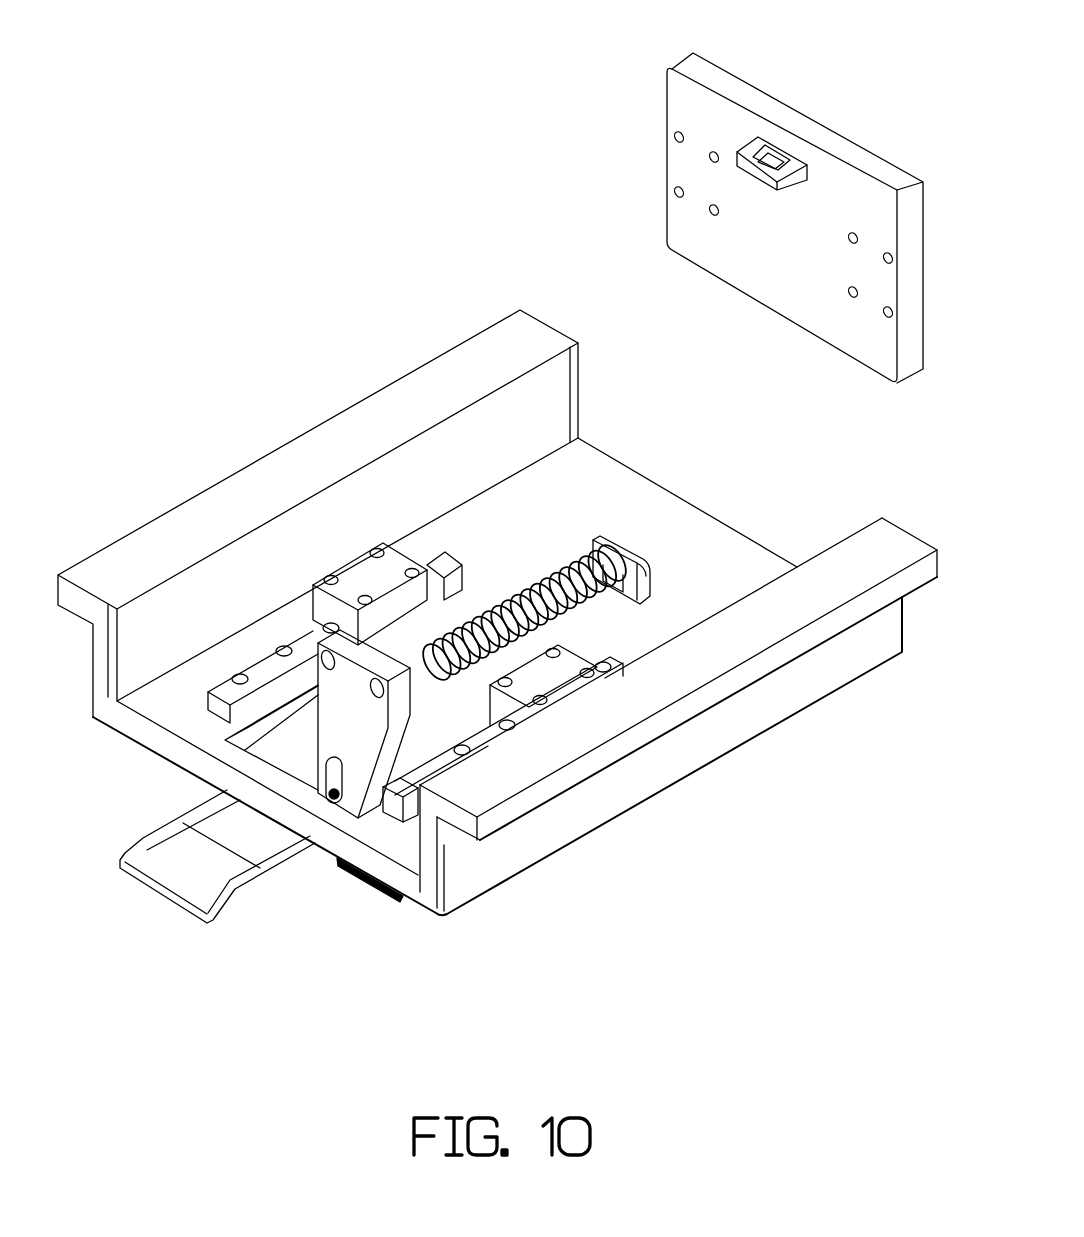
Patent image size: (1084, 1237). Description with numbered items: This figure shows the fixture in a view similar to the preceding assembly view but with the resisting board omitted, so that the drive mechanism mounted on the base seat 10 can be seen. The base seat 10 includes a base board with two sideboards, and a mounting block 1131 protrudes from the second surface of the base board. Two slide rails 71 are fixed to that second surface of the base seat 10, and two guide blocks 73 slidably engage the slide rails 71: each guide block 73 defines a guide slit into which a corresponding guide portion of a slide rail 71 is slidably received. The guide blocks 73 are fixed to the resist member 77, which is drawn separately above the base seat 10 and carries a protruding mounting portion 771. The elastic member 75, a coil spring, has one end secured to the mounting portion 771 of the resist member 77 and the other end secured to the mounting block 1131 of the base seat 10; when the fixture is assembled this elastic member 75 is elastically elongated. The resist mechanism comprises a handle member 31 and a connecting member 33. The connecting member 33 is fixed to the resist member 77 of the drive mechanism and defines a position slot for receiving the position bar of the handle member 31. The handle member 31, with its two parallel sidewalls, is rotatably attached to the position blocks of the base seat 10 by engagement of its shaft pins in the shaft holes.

The base seat 10 is at (690, 745).
The handle member 31 is at (240, 900).
The connecting member 33 is at (342, 727).
The slide rail 71 is at (397, 808).
The guide block 73 is at (550, 683).
The elastic member 75 is at (620, 543).
The resist member 77 is at (796, 201).
The mounting portion 771 is at (792, 167).
The mounting block 1131 is at (643, 583).